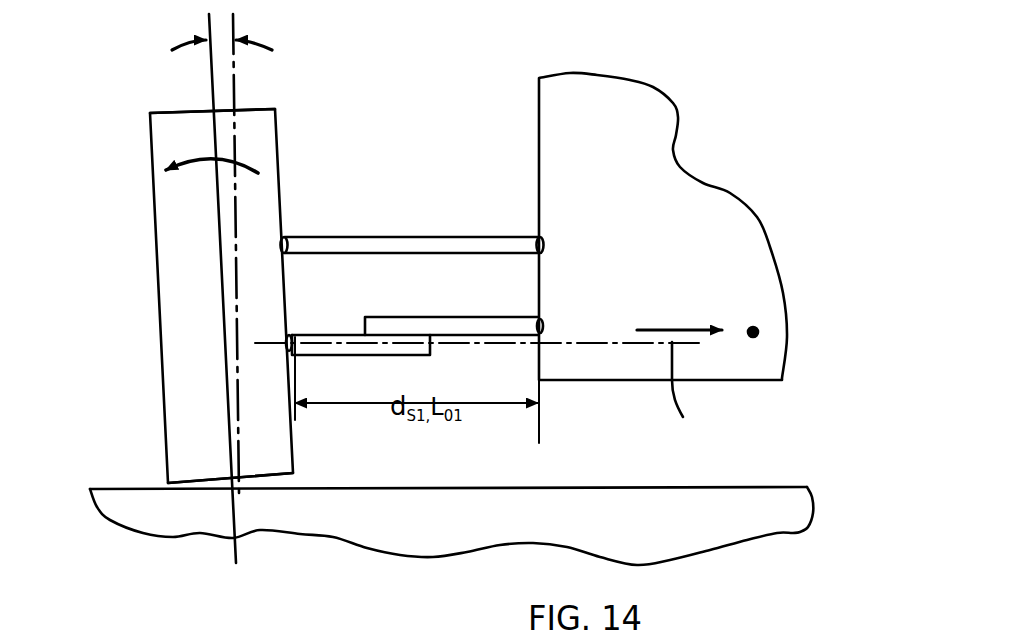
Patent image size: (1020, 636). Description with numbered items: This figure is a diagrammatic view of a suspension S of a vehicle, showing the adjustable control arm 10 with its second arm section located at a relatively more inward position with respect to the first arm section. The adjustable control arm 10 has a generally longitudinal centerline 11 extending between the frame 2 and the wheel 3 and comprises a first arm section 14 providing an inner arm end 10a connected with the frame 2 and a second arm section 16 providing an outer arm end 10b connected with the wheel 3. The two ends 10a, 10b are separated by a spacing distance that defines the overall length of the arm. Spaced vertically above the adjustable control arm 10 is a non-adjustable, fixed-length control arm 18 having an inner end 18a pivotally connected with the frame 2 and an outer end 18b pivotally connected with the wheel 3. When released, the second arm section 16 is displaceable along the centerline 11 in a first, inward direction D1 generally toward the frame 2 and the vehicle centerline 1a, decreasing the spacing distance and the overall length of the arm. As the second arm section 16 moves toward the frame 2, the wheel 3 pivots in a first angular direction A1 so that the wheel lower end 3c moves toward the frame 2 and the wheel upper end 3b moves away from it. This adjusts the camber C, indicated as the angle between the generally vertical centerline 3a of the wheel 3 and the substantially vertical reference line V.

The centerline 1a is at (756, 330).
The frame 2 is at (709, 226).
The wheel 3 is at (162, 270).
The vertical centerline 3a is at (233, 78).
The wheel upper end 3b is at (172, 130).
The wheel lower end 3c is at (200, 467).
The adjustable control arm 10 is at (561, 286).
The inner arm end 10a is at (545, 326).
The outer arm end 10b is at (287, 355).
The longitudinal centerline 11 is at (699, 391).
The first arm section 14 is at (445, 316).
The second arm section 16 is at (320, 334).
The fixed control arm 18 is at (377, 235).
The inner end 18a is at (523, 235).
The outer end 18b is at (294, 233).
The suspension S is at (768, 487).
The vertical reference line V is at (209, 72).
The camber C is at (269, 55).
The first angular direction A1 is at (212, 187).
The first inward direction D1 is at (679, 316).